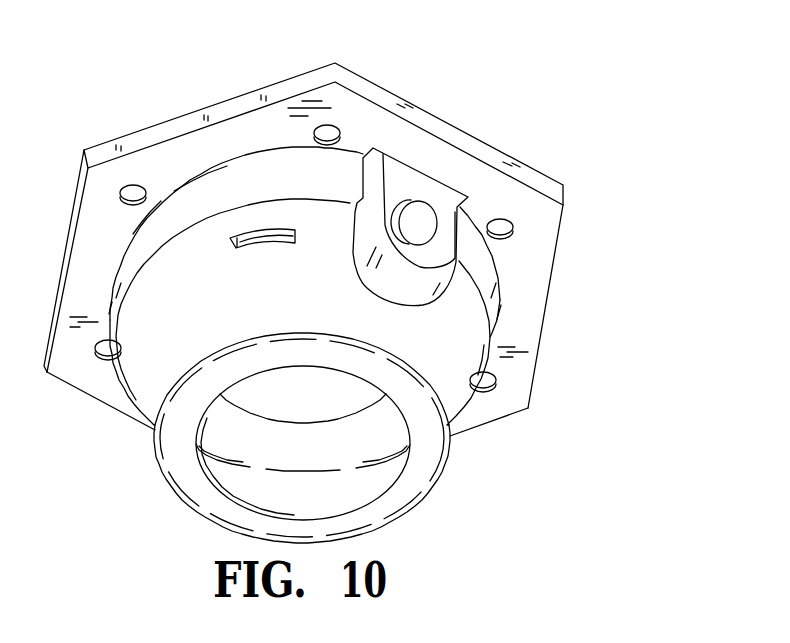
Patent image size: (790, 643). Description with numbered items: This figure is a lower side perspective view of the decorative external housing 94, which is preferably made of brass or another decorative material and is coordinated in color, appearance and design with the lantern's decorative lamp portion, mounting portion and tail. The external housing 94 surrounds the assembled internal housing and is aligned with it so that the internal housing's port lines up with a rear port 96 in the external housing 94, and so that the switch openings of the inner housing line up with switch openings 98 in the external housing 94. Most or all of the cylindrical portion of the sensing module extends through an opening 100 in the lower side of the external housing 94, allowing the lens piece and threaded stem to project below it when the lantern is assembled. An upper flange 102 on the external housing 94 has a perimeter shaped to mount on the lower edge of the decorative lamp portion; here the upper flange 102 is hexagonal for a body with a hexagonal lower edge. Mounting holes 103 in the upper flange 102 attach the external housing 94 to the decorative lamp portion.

The decorative external housing 94 is at (549, 337).
The rear port 96 is at (418, 224).
The switch openings 98 is at (247, 250).
The opening 100 is at (397, 446).
The upper flange 102 is at (357, 82).
The mounting holes 103 is at (505, 226).